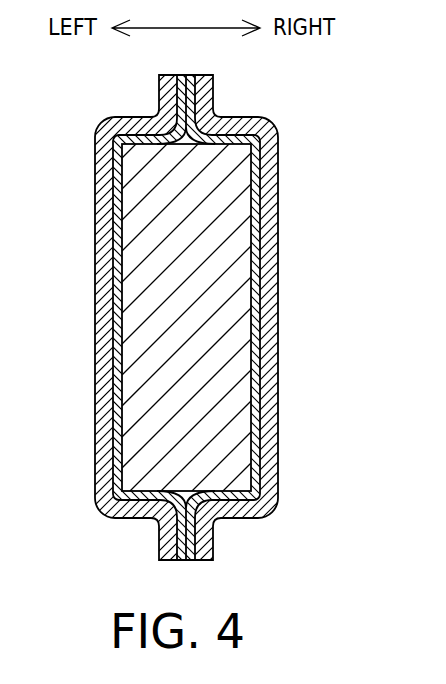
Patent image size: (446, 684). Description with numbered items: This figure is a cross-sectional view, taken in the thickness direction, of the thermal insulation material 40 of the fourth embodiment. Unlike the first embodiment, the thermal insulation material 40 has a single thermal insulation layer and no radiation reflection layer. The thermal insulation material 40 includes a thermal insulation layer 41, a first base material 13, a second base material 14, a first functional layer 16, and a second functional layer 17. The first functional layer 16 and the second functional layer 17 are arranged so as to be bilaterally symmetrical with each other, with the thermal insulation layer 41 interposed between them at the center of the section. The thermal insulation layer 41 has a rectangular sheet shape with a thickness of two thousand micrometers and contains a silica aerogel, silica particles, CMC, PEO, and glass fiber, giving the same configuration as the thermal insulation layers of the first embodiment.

The first base material 13 is at (128, 118).
The second base material 14 is at (245, 118).
The first functional layer 16 is at (100, 288).
The second functional layer 17 is at (275, 288).
The thermal insulation material 40 is at (336, 121).
The thermal insulation layer 41 is at (193, 257).